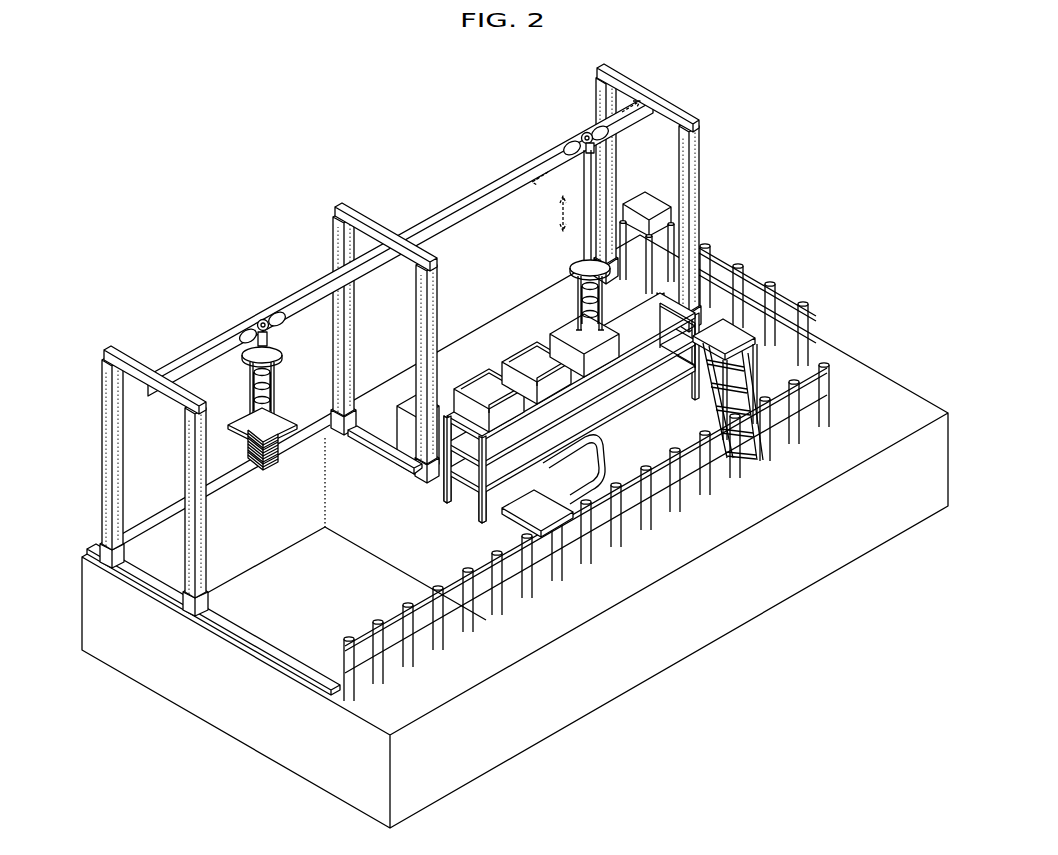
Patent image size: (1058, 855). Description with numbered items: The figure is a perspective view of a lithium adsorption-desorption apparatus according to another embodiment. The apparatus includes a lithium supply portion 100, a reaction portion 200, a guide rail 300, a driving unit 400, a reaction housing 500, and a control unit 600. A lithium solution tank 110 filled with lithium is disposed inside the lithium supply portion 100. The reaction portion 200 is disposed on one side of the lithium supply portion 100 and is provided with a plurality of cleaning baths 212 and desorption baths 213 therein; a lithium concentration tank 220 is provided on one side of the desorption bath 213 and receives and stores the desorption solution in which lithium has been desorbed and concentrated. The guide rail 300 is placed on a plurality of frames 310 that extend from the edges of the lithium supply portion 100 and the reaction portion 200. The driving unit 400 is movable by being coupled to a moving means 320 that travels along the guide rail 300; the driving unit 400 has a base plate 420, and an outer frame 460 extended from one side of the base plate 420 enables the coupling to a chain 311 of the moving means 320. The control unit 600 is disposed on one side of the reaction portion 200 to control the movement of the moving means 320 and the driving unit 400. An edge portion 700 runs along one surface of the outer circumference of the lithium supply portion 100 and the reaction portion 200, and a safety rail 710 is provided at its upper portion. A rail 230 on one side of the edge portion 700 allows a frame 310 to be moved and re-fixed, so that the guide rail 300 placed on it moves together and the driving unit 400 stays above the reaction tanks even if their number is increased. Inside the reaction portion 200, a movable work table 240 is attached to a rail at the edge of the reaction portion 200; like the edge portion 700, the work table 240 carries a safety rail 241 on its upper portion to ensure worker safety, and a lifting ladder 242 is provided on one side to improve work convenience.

The lithium supply portion 100 is at (180, 494).
The lithium solution tank 110 is at (298, 602).
The reaction portion 200 is at (567, 389).
The cleaning bath 212 is at (424, 470).
The desorption bath 213 is at (450, 401).
The lithium concentration tank 220 is at (522, 513).
The rail 230 is at (303, 673).
The work table 240 is at (722, 333).
The safety rail 241 is at (699, 332).
The lifting ladder 242 is at (752, 382).
The guide rail 300 is at (516, 178).
The frame 310 is at (107, 460).
The chain 311 is at (577, 168).
The moving means 320 is at (424, 212).
The driving unit 400 is at (420, 282).
The base plate 420 is at (242, 418).
The outer frame 460 is at (278, 397).
The reaction housing 500 is at (272, 462).
The control unit 600 is at (661, 215).
The edge portion 700 is at (880, 392).
The safety rail 710 is at (828, 384).